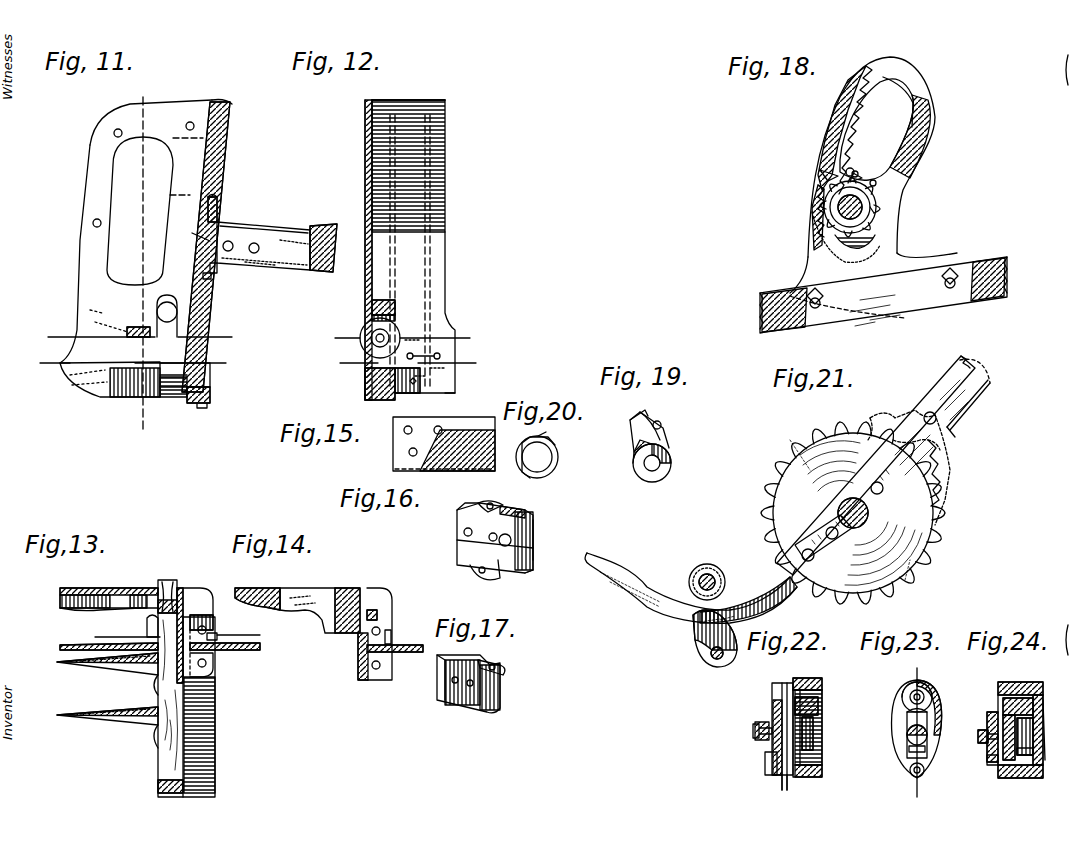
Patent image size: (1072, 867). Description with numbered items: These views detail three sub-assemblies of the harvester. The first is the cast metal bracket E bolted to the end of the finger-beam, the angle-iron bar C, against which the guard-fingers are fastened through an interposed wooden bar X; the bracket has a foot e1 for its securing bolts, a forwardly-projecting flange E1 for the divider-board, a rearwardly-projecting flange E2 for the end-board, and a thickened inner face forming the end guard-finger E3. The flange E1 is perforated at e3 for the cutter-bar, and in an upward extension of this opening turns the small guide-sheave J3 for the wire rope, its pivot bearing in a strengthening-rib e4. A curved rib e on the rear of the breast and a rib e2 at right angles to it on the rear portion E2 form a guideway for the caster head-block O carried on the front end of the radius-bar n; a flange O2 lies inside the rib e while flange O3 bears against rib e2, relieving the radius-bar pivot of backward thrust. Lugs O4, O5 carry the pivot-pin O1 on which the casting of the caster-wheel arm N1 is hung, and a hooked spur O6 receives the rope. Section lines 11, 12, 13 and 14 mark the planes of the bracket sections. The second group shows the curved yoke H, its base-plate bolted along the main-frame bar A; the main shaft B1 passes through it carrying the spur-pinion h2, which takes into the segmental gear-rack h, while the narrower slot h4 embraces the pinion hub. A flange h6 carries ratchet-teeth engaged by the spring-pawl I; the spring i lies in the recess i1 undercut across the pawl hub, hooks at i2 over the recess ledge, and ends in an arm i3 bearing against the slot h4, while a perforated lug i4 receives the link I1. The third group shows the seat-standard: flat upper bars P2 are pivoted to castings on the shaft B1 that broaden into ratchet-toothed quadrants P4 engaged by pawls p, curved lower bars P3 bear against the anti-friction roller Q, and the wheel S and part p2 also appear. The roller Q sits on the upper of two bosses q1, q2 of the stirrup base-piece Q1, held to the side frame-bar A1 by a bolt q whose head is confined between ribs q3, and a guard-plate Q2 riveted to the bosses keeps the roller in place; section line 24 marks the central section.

In FIG. 11, the section line 12 is at (116, 100).
In FIG. 11, the section line 13 is at (223, 328).
In FIG. 12, the section line 13 is at (468, 328).
In FIG. 11, the section line 14 is at (223, 355).
In FIG. 12, the section line 14 is at (468, 356).
In FIG. 13, the section line 11 is at (271, 649).
In FIG. 23, the section line 24 is at (901, 795).
In FIG. 11, the cast metal bracket E is at (199, 150).
In FIG. 12, the cast metal bracket E is at (392, 246).
In FIG. 13, the cast metal bracket E is at (180, 640).
In FIG. 14, the cast metal bracket E is at (360, 655).
In FIG. 11, the forwardly-projecting flange E1 is at (135, 303).
In FIG. 12, the forwardly-projecting flange E1 is at (372, 185).
In FIG. 13, the forwardly-projecting flange E1 is at (120, 590).
In FIG. 12, the rearwardly-projecting flange E2 is at (445, 135).
In FIG. 13, the rearwardly-projecting flange E2 is at (245, 652).
In FIG. 14, the rearwardly-projecting flange E2 is at (410, 654).
In FIG. 11, the end guard-finger E3 is at (105, 384).
In FIG. 12, the end guard-finger E3 is at (365, 388).
In FIG. 13, the end guard-finger E3 is at (85, 608).
In FIG. 14, the end guard-finger E3 is at (257, 587).
In FIG. 11, the curved rib e is at (231, 107).
In FIG. 12, the curved rib e is at (392, 110).
In FIG. 13, the curved rib e is at (200, 608).
In FIG. 14, the curved rib e is at (372, 602).
In FIG. 11, the foot e1 is at (210, 383).
In FIG. 13, the foot e1 is at (212, 622).
In FIG. 14, the foot e1 is at (382, 618).
In FIG. 12, the rib e2 is at (456, 390).
In FIG. 13, the rib e2 is at (215, 640).
In FIG. 14, the rib e2 is at (390, 640).
In FIG. 14, the perforation e3 is at (299, 594).
In FIG. 12, the strengthening-rib e4 is at (388, 300).
In FIG. 13, the strengthening-rib e4 is at (148, 624).
In FIG. 11, the guide-sheave J3 is at (156, 318).
In FIG. 12, the guide-sheave J3 is at (356, 316).
In FIG. 13, the guide-sheave J3 is at (168, 580).
In FIG. 11, the angle-iron bar C is at (212, 397).
In FIG. 13, the angle-iron bar C is at (205, 712).
In FIG. 15, the angle-iron bar C is at (444, 444).
In FIG. 13, the wooden bar X is at (158, 776).
In FIG. 11, the caster head-block O is at (246, 232).
In FIG. 16, the caster head-block O is at (495, 538).
In FIG. 17, the caster head-block O is at (470, 695).
In FIG. 11, the pivot-pin O1 is at (214, 212).
In FIG. 17, the pivot-pin O1 is at (478, 660).
In FIG. 11, the projecting flange O2 is at (201, 239).
In FIG. 16, the projecting flange O2 is at (525, 568).
In FIG. 11, the flange O3 is at (212, 270).
In FIG. 16, the flange O3 is at (525, 510).
In FIG. 11, the upper lug O4 is at (219, 224).
In FIG. 16, the upper lug O4 is at (490, 505).
In FIG. 11, the lower lug O5 is at (208, 276).
In FIG. 16, the lower lug O5 is at (488, 578).
In FIG. 16, the hooked spur O6 is at (546, 537).
In FIG. 11, the radius-bar n is at (285, 244).
In FIG. 11, the caster-wheel arm N1 is at (316, 238).
In FIG. 18, the yoke H is at (928, 107).
In FIG. 18, the segmental gear-rack h is at (923, 132).
In FIG. 18, the spur-pinion h2 is at (812, 228).
In FIG. 18, the slot h4 is at (912, 77).
In FIG. 18, the ratchet flange h6 is at (860, 78).
In FIG. 18, the spring-pawl I is at (828, 181).
In FIG. 19, the spring-pawl I is at (657, 446).
In FIG. 18, the link I1 is at (853, 173).
In FIG. 18, the spring i is at (874, 211).
In FIG. 20, the spring i is at (560, 455).
In FIG. 19, the recess i1 is at (633, 450).
In FIG. 18, the hook i2 is at (858, 171).
In FIG. 20, the hook i2 is at (542, 440).
In FIG. 18, the projecting arm i3 is at (876, 182).
In FIG. 20, the projecting arm i3 is at (522, 443).
In FIG. 18, the perforated lug i4 is at (850, 168).
In FIG. 19, the perforated lug i4 is at (664, 424).
In FIG. 18, the main shaft B1 is at (865, 204).
In FIG. 21, the main shaft B1 is at (870, 520).
In FIG. 18, the main-frame bar A is at (883, 295).
In FIG. 22, the side frame-bar A1 is at (775, 765).
In FIG. 24, the side frame-bar A1 is at (988, 760).
In FIG. 21, the ratchet wheel S is at (853, 513).
In FIG. 21, the upper standard bars P2 is at (890, 465).
In FIG. 21, the pawl p is at (947, 432).
In FIG. 21, the lever end p2 is at (975, 400).
In FIG. 21, the lower standard bars P3 is at (785, 590).
In FIG. 22, the lower standard bars P3 is at (813, 734).
In FIG. 24, the lower standard bars P3 is at (1033, 735).
In FIG. 21, the quadrant P4 is at (950, 485).
In FIG. 21, the anti-friction roller Q is at (689, 582).
In FIG. 22, the anti-friction roller Q is at (817, 678).
In FIG. 23, the anti-friction roller Q is at (932, 686).
In FIG. 24, the anti-friction roller Q is at (1030, 680).
In FIG. 22, the base-piece Q1 is at (778, 698).
In FIG. 23, the base-piece Q1 is at (897, 728).
In FIG. 24, the base-piece Q1 is at (1003, 690).
In FIG. 21, the guard-plate Q2 is at (695, 638).
In FIG. 22, the guard-plate Q2 is at (820, 707).
In FIG. 24, the guard-plate Q2 is at (1045, 705).
In FIG. 22, the retaining-bolt q is at (753, 731).
In FIG. 23, the retaining-bolt q is at (928, 737).
In FIG. 24, the retaining-bolt q is at (988, 732).
In FIG. 21, the upper boss q1 is at (714, 576).
In FIG. 22, the upper boss q1 is at (808, 678).
In FIG. 23, the upper boss q1 is at (902, 694).
In FIG. 24, the upper boss q1 is at (1003, 700).
In FIG. 21, the lower boss q2 is at (725, 659).
In FIG. 22, the lower boss q2 is at (814, 776).
In FIG. 23, the lower boss q2 is at (924, 772).
In FIG. 24, the lower boss q2 is at (1015, 778).
In FIG. 22, the ribs q3 is at (785, 780).
In FIG. 23, the ribs q3 is at (908, 742).
In FIG. 24, the ribs q3 is at (1035, 750).